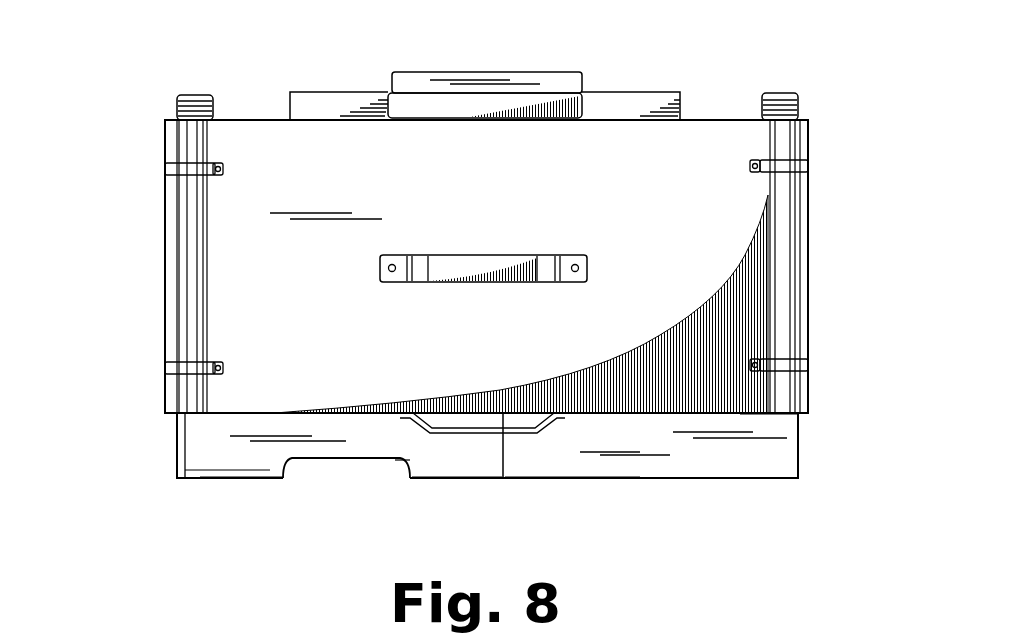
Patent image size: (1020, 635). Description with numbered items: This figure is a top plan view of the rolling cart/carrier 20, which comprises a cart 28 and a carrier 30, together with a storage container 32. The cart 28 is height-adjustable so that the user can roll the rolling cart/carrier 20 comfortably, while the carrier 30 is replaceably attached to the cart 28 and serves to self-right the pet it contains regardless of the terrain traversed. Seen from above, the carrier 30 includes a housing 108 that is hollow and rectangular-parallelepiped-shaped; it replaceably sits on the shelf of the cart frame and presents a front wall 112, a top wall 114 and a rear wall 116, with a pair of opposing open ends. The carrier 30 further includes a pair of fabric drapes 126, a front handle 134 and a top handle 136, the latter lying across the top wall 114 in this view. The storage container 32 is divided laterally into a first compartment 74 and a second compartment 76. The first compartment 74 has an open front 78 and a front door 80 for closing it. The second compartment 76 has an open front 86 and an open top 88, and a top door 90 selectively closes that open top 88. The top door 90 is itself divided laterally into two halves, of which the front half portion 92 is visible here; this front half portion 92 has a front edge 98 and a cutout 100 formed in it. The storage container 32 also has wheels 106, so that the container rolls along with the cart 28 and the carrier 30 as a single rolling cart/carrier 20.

The rolling cart/carrier 20 is at (53, 208).
The cart 28 is at (480, 66).
The carrier 30 is at (243, 115).
The storage container 32 is at (698, 113).
The first compartment 74 is at (793, 492).
The second compartment 76 is at (218, 467).
The open front 78 is at (692, 477).
The front door 80 is at (642, 480).
The open front 86 is at (303, 478).
The open top 88 is at (193, 440).
The top door 90 is at (222, 430).
The front half portion 92 is at (385, 474).
The front edge 98 is at (475, 479).
The cutout 100 is at (350, 468).
The wheels 106 is at (194, 92).
The housing 108 is at (735, 115).
The front wall 112 is at (736, 415).
The top wall 114 is at (695, 268).
The rear wall 116 is at (268, 120).
The fabric drapes 126 is at (215, 194).
The front handle 134 is at (443, 417).
The top handle 136 is at (500, 247).